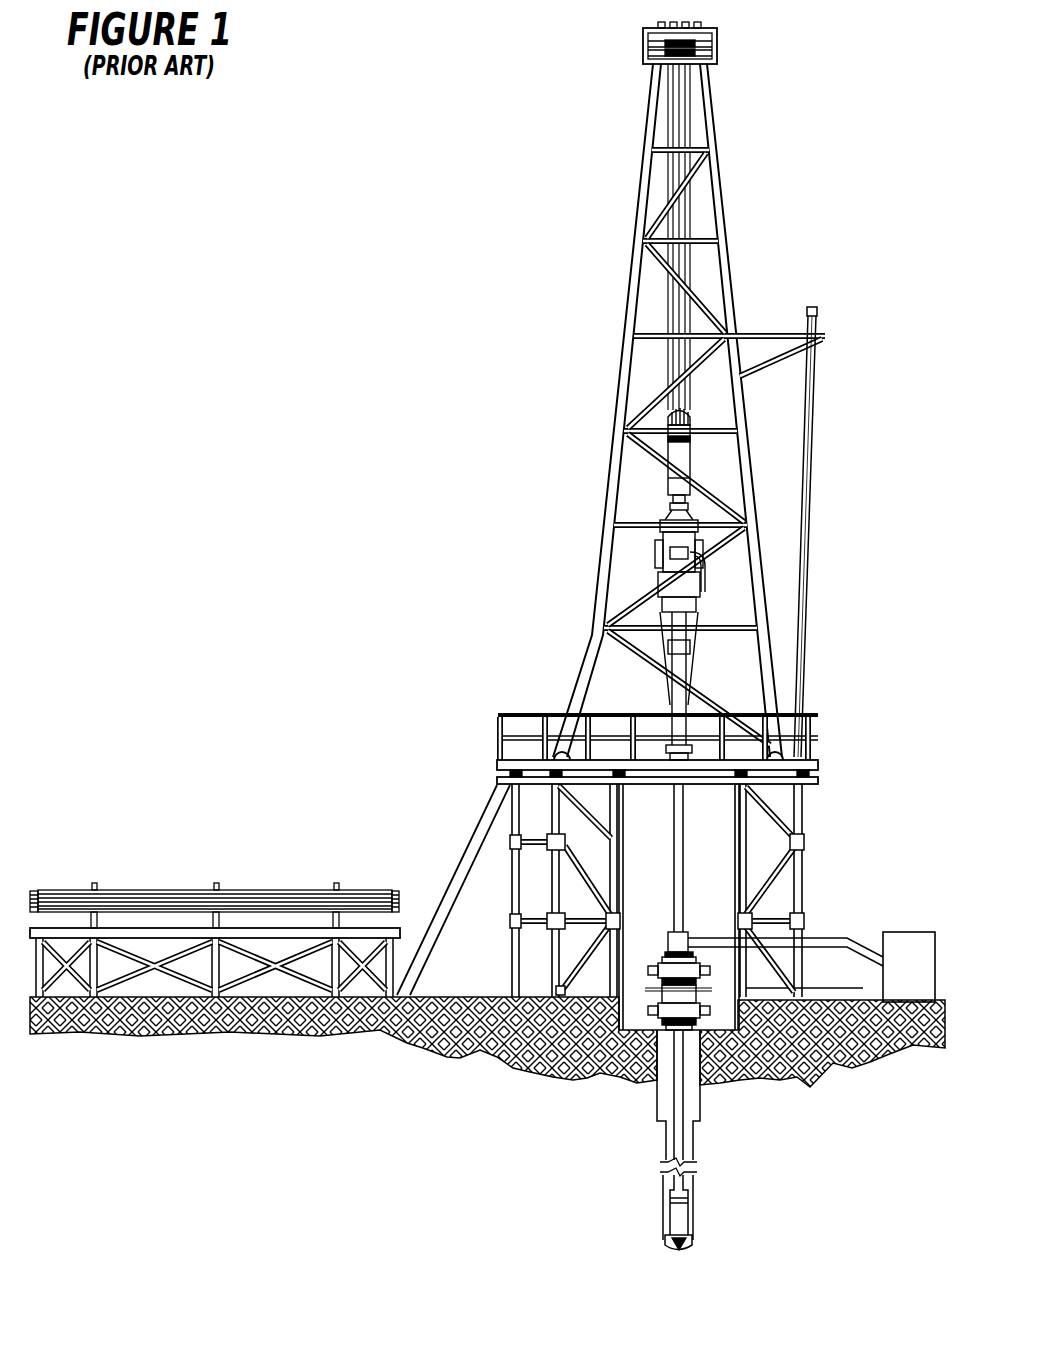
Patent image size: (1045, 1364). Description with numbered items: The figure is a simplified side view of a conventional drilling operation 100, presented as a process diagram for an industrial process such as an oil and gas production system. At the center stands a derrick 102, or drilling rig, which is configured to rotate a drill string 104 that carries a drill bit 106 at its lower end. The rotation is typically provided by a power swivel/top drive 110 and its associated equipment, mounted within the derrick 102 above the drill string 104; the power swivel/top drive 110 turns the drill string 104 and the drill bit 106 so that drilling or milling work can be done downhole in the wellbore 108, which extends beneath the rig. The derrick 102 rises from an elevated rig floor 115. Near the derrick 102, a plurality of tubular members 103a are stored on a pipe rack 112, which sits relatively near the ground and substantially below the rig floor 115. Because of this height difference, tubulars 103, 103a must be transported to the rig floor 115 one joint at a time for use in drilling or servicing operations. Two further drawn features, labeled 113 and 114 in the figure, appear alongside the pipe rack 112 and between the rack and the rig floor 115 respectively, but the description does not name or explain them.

The drilling operation 100 is at (584, 1256).
The derrick 102 is at (613, 492).
The tubulars 103 is at (678, 862).
The tubular members 103a is at (367, 892).
The drill string 104 is at (693, 1128).
The drill bit 106 is at (692, 1240).
The wellbore 108 is at (672, 1140).
The power swivel/top drive 110 is at (713, 601).
The pipe rack 112 is at (215, 889).
The tubulars 113 is at (130, 915).
The ramp 114 is at (458, 860).
The rig floor 115 is at (519, 760).